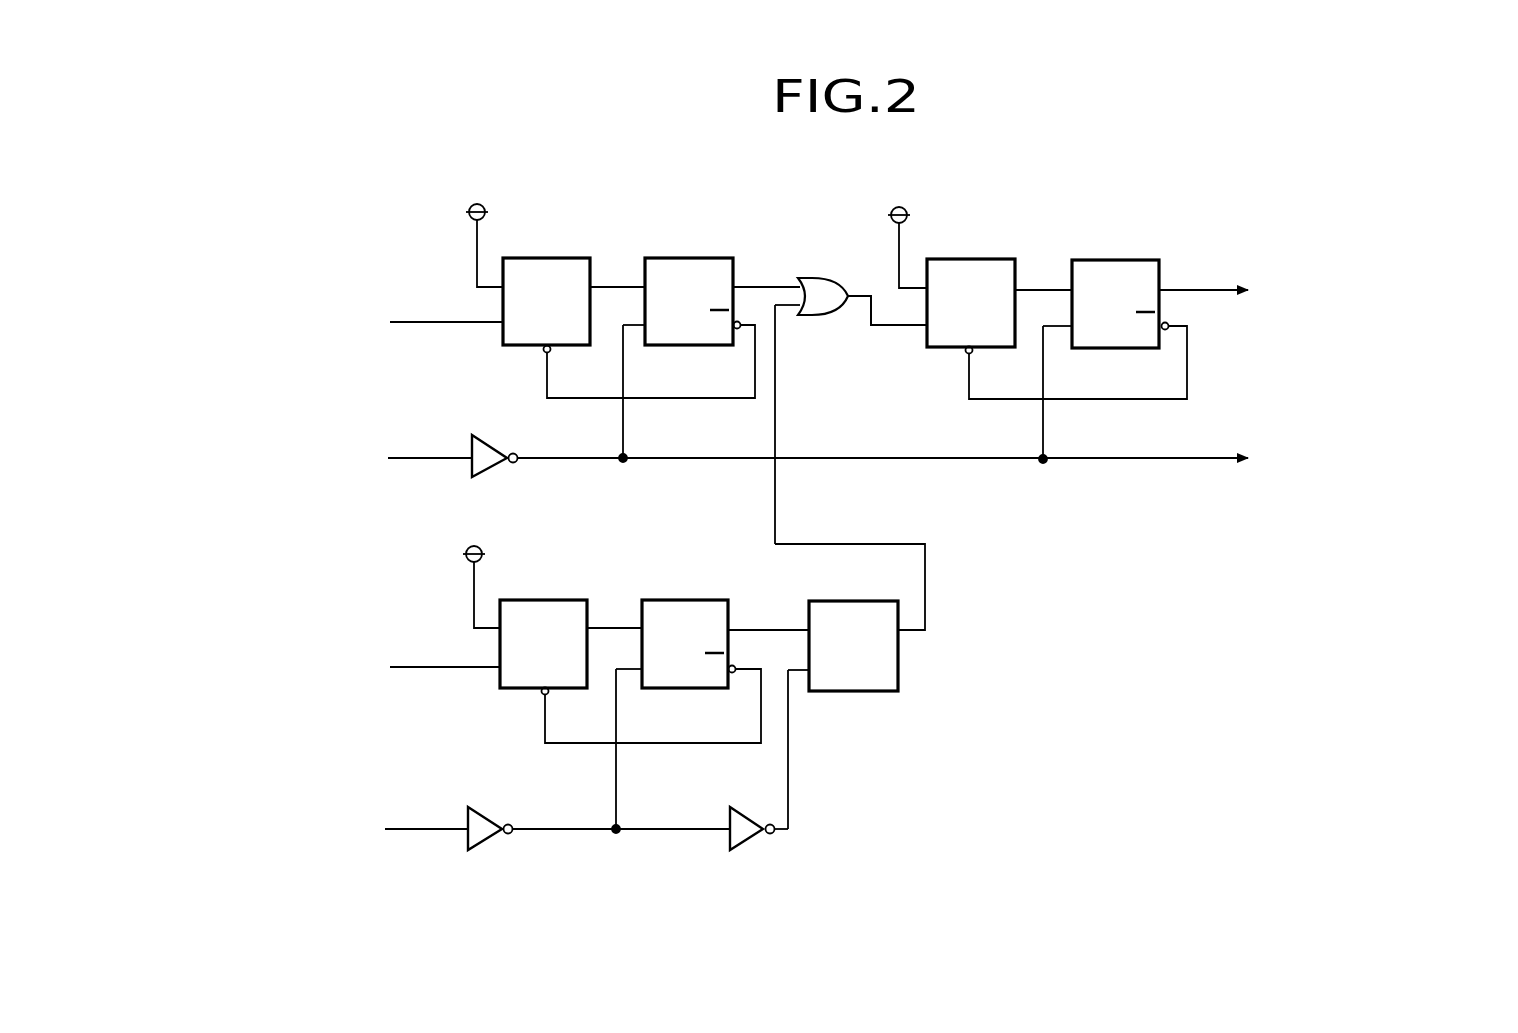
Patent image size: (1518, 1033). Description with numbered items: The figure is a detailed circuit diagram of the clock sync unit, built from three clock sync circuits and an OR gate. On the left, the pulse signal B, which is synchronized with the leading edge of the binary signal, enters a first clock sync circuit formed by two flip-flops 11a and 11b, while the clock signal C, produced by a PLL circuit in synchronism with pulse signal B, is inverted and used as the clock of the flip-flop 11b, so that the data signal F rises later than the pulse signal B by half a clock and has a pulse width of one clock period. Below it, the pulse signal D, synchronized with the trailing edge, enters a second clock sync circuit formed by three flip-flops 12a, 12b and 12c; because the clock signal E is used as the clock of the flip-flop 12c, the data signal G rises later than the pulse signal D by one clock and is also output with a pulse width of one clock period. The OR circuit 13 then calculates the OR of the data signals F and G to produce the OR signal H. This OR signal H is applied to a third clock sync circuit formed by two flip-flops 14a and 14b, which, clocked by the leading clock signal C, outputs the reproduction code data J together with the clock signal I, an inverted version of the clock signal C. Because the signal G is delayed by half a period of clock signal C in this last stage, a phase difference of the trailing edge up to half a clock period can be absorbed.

The flip-flop 11a is at (548, 258).
The flip-flop 11b is at (690, 258).
The flip-flop 12a is at (540, 600).
The flip-flop 12b is at (685, 600).
The flip-flop 12c is at (853, 601).
The OR circuit 13 is at (820, 278).
The flip-flop 14a is at (977, 259).
The flip-flop 14b is at (1118, 260).
The pulse signal B is at (410, 322).
The clock signal C is at (402, 456).
The pulse signal D is at (410, 667).
The clock signal E is at (405, 828).
The data signal F is at (775, 284).
The data signal G is at (925, 580).
The OR signal H is at (870, 314).
The clock signal I is at (1153, 462).
The data J is at (1190, 290).